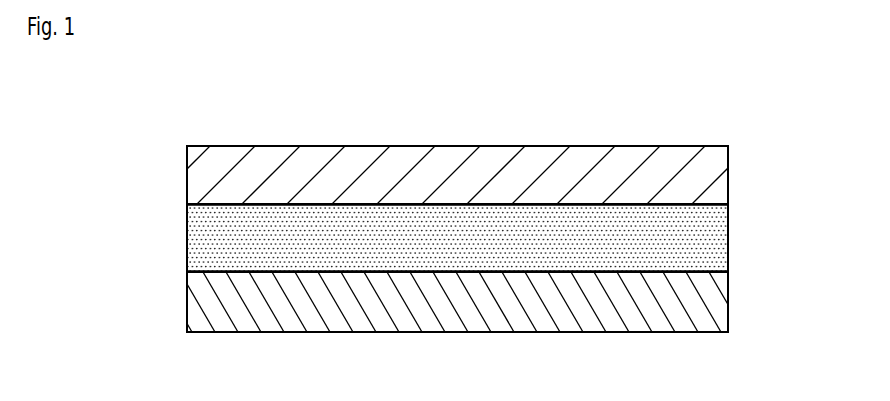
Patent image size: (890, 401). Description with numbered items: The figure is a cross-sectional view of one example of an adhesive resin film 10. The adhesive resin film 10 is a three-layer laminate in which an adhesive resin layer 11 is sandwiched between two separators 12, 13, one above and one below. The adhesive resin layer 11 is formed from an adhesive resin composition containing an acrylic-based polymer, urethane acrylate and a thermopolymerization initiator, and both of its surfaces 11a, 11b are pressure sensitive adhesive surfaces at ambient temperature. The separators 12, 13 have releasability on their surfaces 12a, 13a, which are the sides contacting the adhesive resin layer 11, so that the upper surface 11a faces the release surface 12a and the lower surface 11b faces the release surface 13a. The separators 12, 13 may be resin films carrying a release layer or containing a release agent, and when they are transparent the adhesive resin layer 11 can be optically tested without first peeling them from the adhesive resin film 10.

The adhesive resin film 10 is at (687, 146).
The adhesive resin layer 11 is at (712, 234).
The separator 12 is at (706, 170).
The separator 13 is at (708, 298).
The surface of adhesive resin layer 11a is at (257, 204).
The surface of adhesive resin layer 11b is at (247, 273).
The release surface of separator 12a is at (220, 206).
The release surface of separator 13a is at (204, 272).